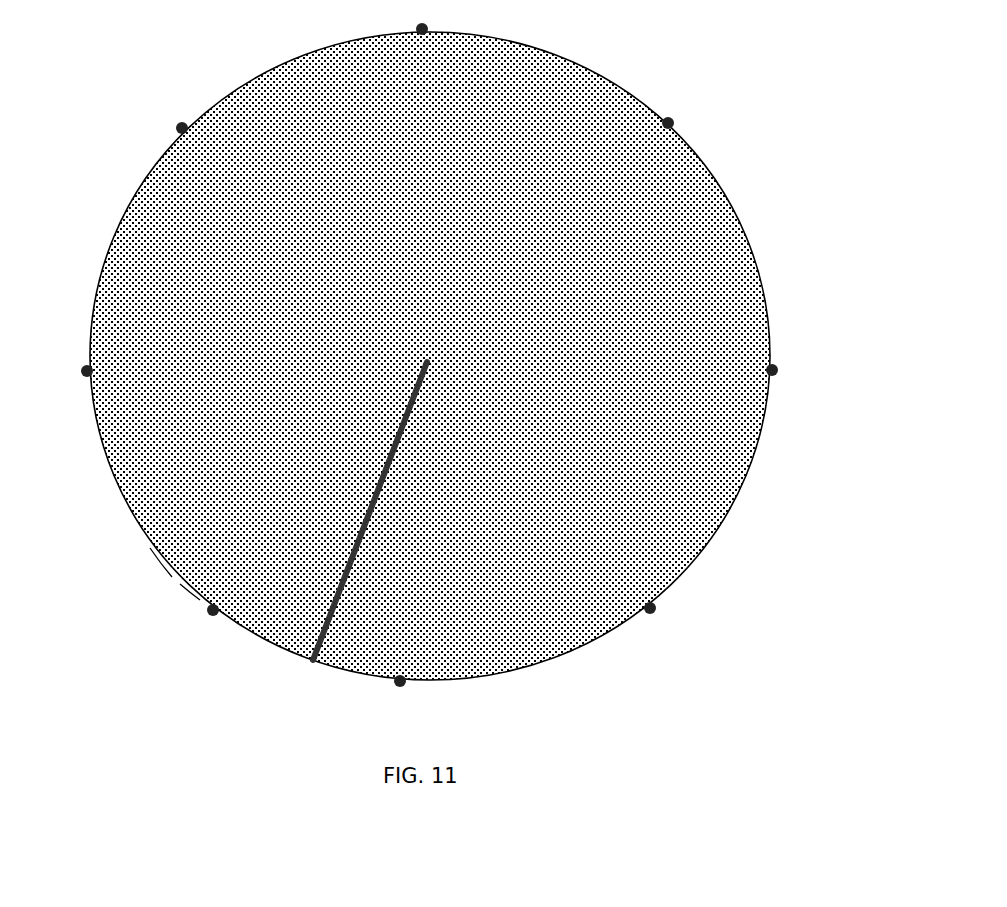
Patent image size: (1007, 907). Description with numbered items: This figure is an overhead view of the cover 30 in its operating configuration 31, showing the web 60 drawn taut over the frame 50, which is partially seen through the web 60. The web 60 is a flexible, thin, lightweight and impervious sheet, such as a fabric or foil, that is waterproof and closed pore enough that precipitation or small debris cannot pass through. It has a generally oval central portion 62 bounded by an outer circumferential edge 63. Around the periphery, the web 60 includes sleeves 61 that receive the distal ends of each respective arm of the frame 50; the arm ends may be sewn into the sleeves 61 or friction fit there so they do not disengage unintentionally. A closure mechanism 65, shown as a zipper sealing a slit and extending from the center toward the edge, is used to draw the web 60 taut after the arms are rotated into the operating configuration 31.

The frame 50 is at (156, 365).
The web 60 is at (146, 491).
The sleeves 61 is at (82, 370).
The central portion 62 is at (186, 577).
The outer circumferential edge 63 is at (160, 557).
The closure mechanism 65 is at (330, 613).
The cover 30 is at (625, 724).
The operating configuration 31 is at (685, 724).